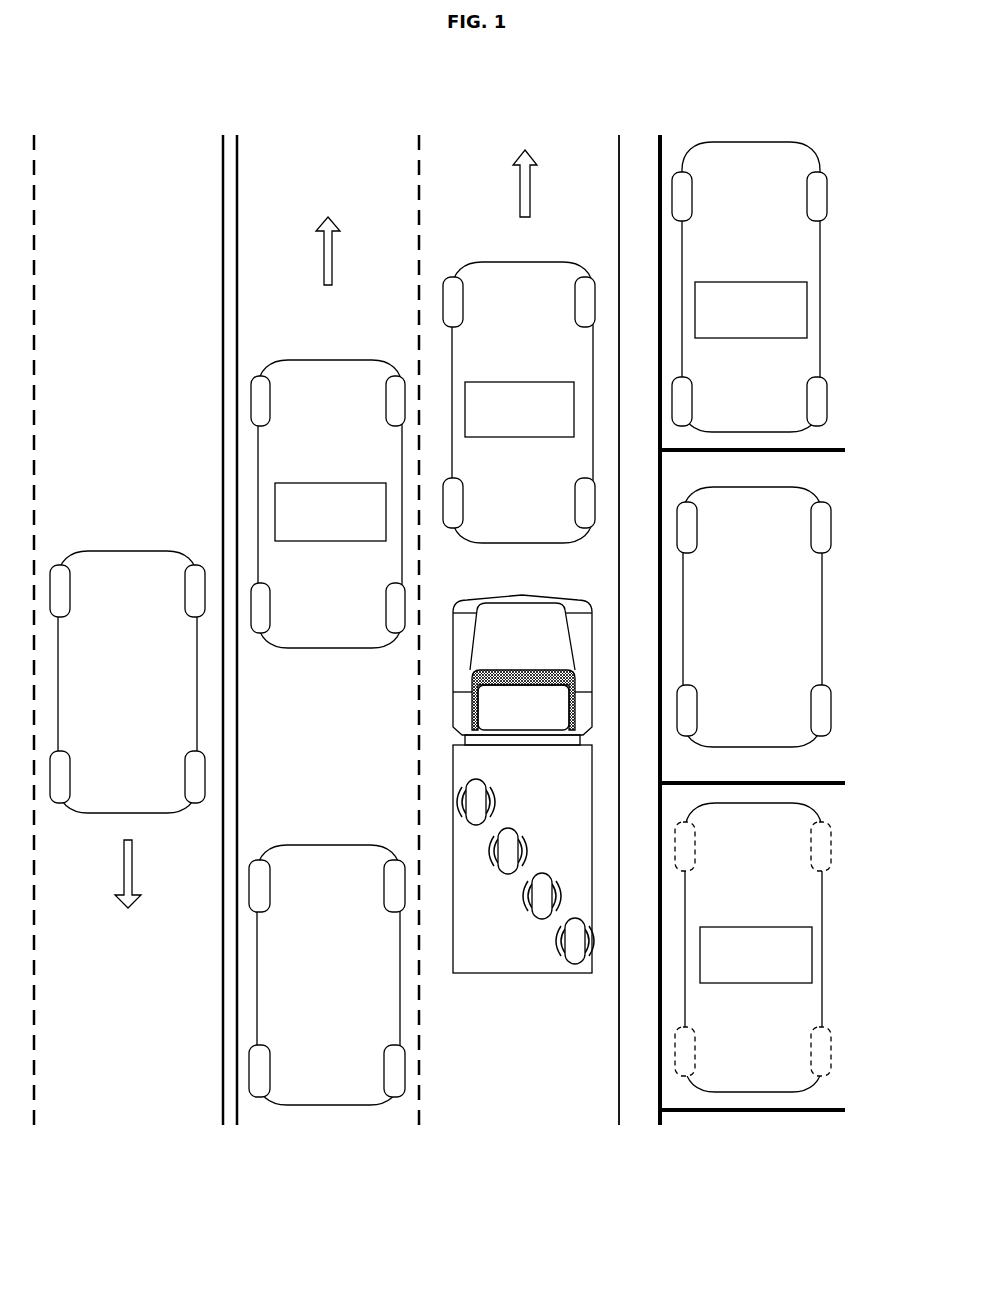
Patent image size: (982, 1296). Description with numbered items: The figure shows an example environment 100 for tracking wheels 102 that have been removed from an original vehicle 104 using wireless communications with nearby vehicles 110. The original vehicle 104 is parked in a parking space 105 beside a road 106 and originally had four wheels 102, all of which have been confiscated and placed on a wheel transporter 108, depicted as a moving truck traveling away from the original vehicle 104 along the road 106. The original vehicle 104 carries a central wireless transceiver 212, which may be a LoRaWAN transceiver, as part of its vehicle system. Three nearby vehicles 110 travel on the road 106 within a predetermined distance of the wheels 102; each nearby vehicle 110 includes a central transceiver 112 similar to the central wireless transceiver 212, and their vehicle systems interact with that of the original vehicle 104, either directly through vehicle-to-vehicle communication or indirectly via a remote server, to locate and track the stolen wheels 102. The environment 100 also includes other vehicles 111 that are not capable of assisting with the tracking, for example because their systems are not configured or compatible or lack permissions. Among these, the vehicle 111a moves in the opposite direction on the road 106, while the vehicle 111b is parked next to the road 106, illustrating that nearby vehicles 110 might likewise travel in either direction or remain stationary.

The environment 100 is at (181, 75).
The wheels 102 is at (476, 778).
The original vehicle 104 is at (685, 1005).
The parking space 105 is at (683, 1090).
The road 106 is at (266, 152).
The wheel transporter 108 is at (505, 595).
The nearby vehicles 110 is at (310, 360).
The other vehicles 111 is at (302, 845).
The vehicle 111a is at (117, 551).
The vehicle 111b is at (760, 487).
The central transceiver 112 is at (307, 541).
The central wireless transceiver 212 is at (730, 983).